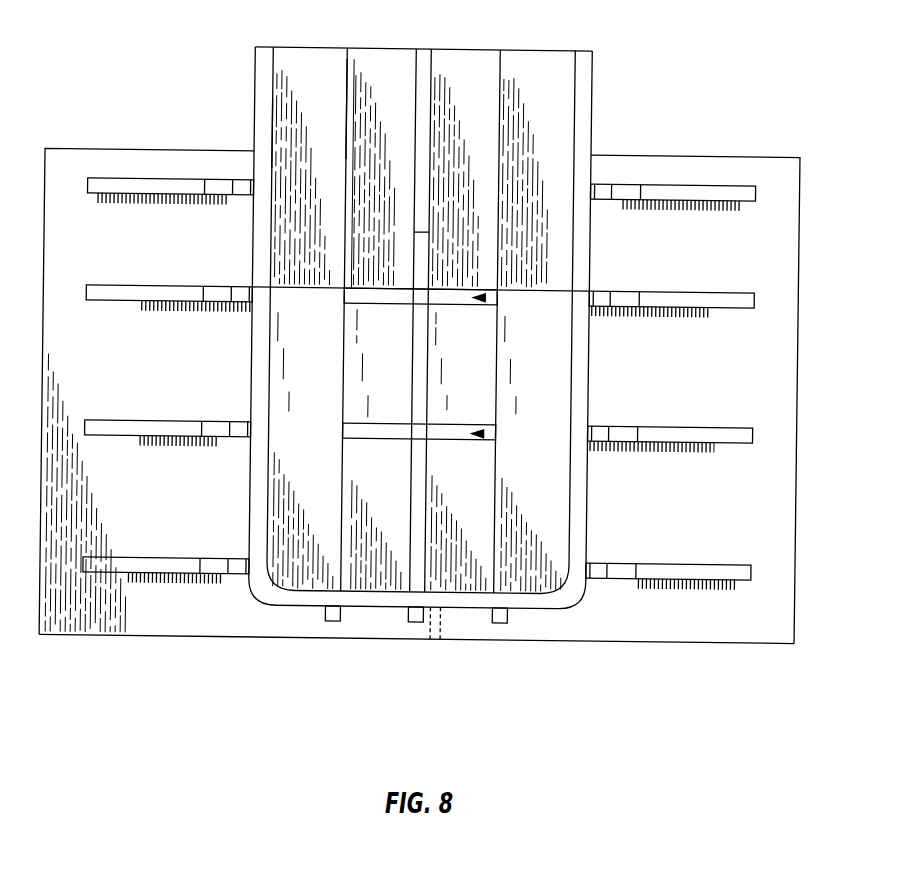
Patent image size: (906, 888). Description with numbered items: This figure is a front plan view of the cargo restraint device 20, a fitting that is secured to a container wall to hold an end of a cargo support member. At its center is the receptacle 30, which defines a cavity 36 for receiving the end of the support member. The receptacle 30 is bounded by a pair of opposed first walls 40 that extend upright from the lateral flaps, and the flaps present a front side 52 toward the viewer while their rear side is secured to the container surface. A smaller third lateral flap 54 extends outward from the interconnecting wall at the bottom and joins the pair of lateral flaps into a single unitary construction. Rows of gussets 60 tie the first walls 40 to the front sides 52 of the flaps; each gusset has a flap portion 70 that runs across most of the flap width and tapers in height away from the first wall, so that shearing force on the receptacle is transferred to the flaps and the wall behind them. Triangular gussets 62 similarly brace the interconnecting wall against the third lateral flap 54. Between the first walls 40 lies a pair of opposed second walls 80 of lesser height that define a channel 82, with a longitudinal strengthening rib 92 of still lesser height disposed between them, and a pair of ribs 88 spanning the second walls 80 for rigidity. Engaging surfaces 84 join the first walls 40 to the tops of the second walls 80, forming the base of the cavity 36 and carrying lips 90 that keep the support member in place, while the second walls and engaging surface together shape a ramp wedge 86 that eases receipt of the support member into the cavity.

The cargo restraint device 20 is at (444, 352).
The receptacle 30 is at (253, 242).
The cavity 36 is at (585, 376).
The first walls 40 is at (406, 365).
The front side 52 is at (756, 250).
The third lateral flap 54 is at (710, 631).
The gussets 60 is at (451, 372).
The gussets 62 is at (333, 626).
The flap portion 70 is at (197, 187).
The second walls 80 is at (353, 66).
The channel 82 is at (349, 109).
The engaging surfaces 84 is at (549, 71).
The ramp wedge 86 is at (317, 129).
The ribs 88 is at (482, 297).
The lips 90 is at (284, 284).
The longitudinal strengthening rib 92 is at (419, 64).